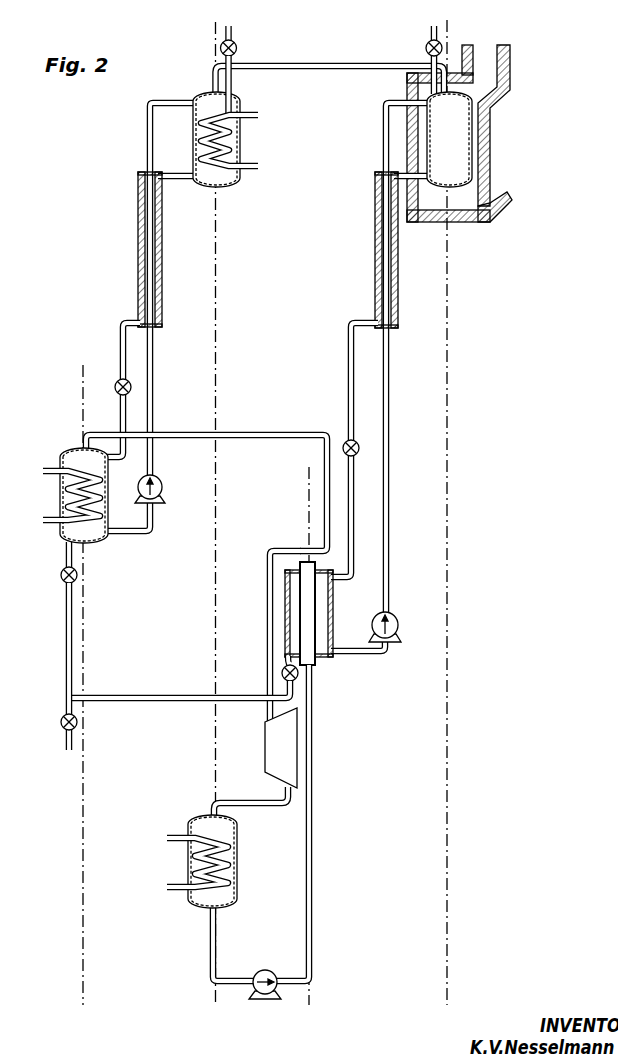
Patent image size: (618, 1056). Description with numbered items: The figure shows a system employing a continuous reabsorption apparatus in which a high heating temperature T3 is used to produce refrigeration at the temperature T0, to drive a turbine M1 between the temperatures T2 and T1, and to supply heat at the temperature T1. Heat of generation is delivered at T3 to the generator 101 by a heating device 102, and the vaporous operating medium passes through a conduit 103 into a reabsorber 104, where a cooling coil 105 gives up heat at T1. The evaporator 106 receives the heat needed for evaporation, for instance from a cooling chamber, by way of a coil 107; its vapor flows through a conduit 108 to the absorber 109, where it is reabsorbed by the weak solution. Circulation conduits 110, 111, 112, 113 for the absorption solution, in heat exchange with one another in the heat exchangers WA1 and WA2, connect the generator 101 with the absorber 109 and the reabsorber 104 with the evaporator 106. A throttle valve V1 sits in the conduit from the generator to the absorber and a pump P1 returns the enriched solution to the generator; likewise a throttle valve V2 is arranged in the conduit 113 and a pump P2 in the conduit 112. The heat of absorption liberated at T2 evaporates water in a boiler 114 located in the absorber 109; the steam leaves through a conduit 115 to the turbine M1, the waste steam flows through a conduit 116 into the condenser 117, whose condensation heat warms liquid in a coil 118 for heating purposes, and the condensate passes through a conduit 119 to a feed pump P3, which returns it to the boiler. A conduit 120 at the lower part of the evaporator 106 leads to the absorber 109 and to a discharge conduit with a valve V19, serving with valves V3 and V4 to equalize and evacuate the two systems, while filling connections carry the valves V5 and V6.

The generator 101 is at (458, 137).
The heating device 102 is at (465, 193).
The conduit 103 is at (352, 62).
The reabsorber 104 is at (193, 146).
The cooling coil 105 is at (237, 140).
The evaporator 106 is at (63, 457).
The coil 107 is at (66, 497).
The conduit 108 is at (280, 433).
The absorber 109 is at (333, 602).
The circulation conduit 110 is at (397, 99).
The circulation conduit 111 is at (400, 179).
The circulation conduit 112 is at (147, 117).
The circulation conduit 113 is at (180, 179).
The boiler 114 is at (310, 635).
The conduit 115 is at (267, 605).
The conduit 116 is at (245, 800).
The condenser 117 is at (237, 842).
The coil 118 is at (229, 865).
The conduit 119 is at (216, 942).
The conduit 120 is at (170, 697).
The throttle valve V1 is at (354, 450).
The throttle valve V2 is at (118, 390).
The valve V3 is at (57, 567).
The valve V4 is at (282, 673).
The valve V5 is at (424, 60).
The valve V6 is at (239, 45).
The valve V19 is at (56, 666).
The pump P1 is at (377, 631).
The pump P2 is at (145, 503).
The feed pump P3 is at (279, 832).
The heat exchanger WA1 is at (375, 277).
The heat exchanger WA2 is at (162, 265).
The turbine M1 is at (265, 748).
The refrigeration temperature T0 is at (82, 705).
The heat supply temperature T1 is at (210, 533).
The absorption temperature T2 is at (305, 756).
The heating temperature T3 is at (445, 532).